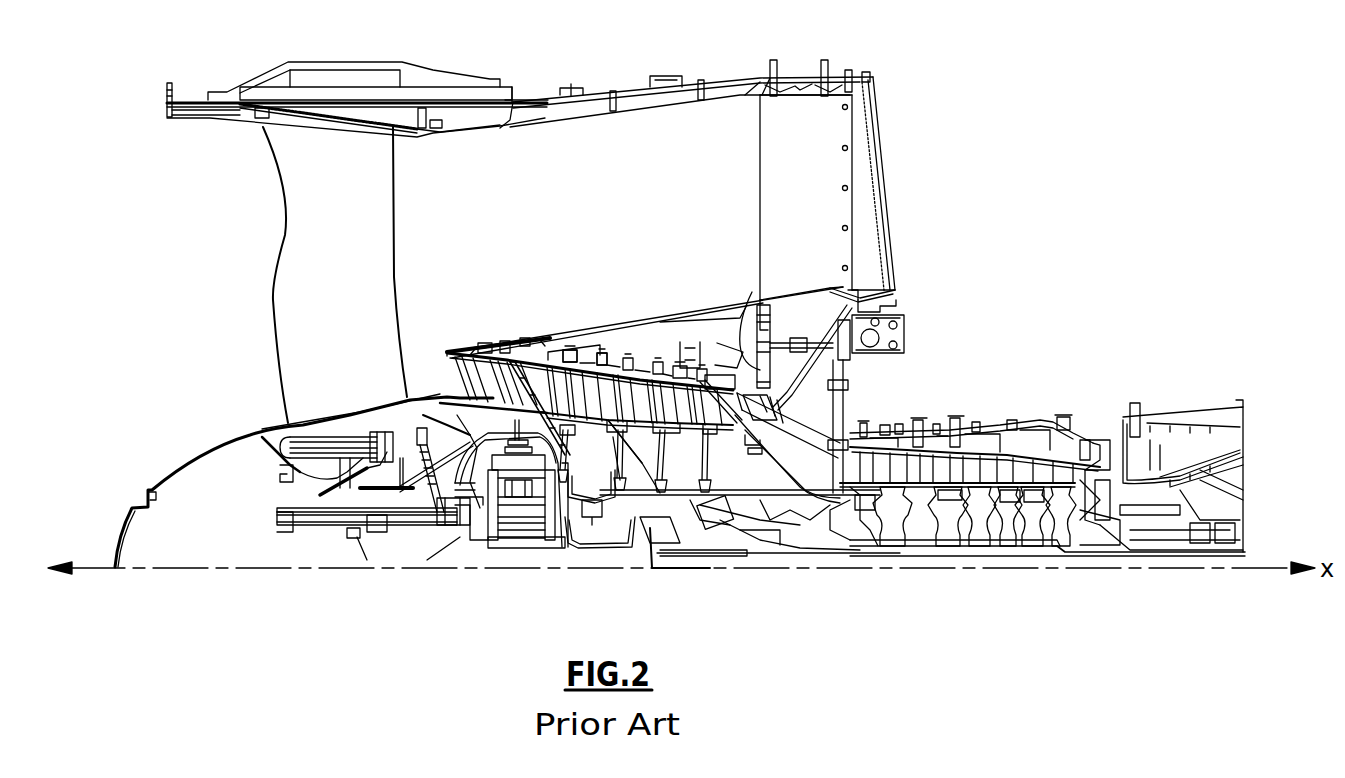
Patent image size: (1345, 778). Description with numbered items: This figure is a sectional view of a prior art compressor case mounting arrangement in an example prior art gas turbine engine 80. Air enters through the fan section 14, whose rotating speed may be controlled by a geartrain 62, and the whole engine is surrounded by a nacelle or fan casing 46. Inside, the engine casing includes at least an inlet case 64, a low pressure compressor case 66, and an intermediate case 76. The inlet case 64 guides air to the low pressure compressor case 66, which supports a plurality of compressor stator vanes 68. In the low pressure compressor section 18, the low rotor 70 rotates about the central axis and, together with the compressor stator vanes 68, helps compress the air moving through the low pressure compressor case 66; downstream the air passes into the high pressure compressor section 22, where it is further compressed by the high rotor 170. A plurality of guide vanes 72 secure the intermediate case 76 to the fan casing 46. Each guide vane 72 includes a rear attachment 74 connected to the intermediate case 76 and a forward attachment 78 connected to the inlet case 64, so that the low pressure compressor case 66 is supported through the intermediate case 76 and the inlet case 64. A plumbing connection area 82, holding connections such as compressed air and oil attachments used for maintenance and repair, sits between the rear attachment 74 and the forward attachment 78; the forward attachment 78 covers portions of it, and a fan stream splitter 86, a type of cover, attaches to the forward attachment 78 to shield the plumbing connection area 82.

The fan section 14 is at (296, 273).
The low pressure compressor section 18 is at (616, 262).
The high pressure compressor section 22 is at (995, 382).
The fan casing 46 is at (731, 80).
The geartrain 62 is at (423, 592).
The inlet case portion 64 is at (468, 345).
The low pressure compressor case portion 66 is at (628, 380).
The compressor stator vanes 68 is at (573, 348).
The low rotor 70 is at (582, 468).
The guide vanes 72 is at (815, 188).
The rear attachment 74 is at (727, 335).
The intermediate case portion 76 is at (817, 413).
The forward attachment 78 is at (463, 345).
The prior art gas turbine engine 80 is at (1030, 92).
The plumbing connection area 82 is at (528, 316).
The fan stream splitter 86 is at (689, 318).
The high rotor 170 is at (916, 530).